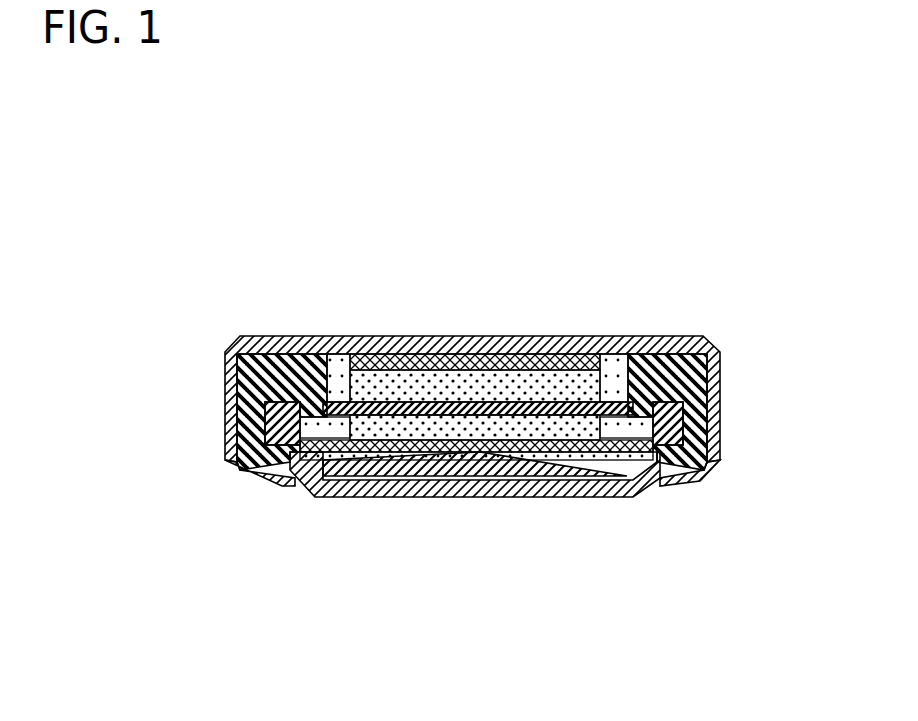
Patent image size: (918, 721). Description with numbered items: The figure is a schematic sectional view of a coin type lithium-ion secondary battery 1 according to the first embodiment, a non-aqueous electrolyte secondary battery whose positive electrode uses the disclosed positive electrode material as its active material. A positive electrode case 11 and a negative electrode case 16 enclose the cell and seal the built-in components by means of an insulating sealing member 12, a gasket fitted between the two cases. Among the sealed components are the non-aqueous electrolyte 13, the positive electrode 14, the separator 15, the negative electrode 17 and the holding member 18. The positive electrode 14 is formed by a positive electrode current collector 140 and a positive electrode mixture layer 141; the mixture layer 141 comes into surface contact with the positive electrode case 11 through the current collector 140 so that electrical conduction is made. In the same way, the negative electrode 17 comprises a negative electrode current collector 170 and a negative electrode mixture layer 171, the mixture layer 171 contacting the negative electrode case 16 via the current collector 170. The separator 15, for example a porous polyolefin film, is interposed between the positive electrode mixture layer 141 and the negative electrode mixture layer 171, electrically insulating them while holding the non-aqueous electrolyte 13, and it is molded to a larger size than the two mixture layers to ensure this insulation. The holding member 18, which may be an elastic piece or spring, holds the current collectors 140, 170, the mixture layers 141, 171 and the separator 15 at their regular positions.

The lithium-ion secondary battery 1 is at (218, 232).
The positive electrode case 11 is at (236, 398).
The sealing member 12 is at (293, 368).
The non-aqueous electrolyte 13 is at (320, 427).
The positive electrode 14 is at (507, 240).
The positive electrode current collector 140 is at (410, 356).
The positive electrode mixture layer 141 is at (480, 380).
The separator 15 is at (590, 395).
The negative electrode case 16 is at (313, 497).
The negative electrode 17 is at (495, 593).
The negative electrode current collector 170 is at (470, 453).
The negative electrode mixture layer 171 is at (408, 427).
The holding member 18 is at (565, 470).